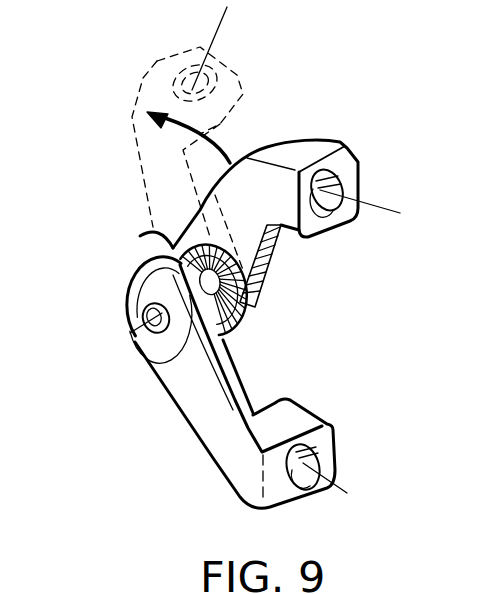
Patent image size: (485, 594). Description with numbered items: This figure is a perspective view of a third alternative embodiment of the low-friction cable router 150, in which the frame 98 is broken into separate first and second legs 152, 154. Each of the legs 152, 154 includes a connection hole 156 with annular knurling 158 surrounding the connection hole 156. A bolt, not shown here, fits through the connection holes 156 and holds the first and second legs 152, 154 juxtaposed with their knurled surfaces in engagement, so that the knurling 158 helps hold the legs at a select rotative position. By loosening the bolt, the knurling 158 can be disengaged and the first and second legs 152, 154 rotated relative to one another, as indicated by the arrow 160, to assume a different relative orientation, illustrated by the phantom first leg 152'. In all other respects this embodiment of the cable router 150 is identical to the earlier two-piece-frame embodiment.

The frame 98 is at (135, 427).
The low-friction cable router 150 is at (318, 280).
The first leg 152 is at (286, 200).
The phantom first leg 152' is at (155, 138).
The second leg 154 is at (230, 450).
The connection hole 156 is at (143, 320).
The annular knurling 158 is at (160, 232).
The arrow 160 is at (232, 152).